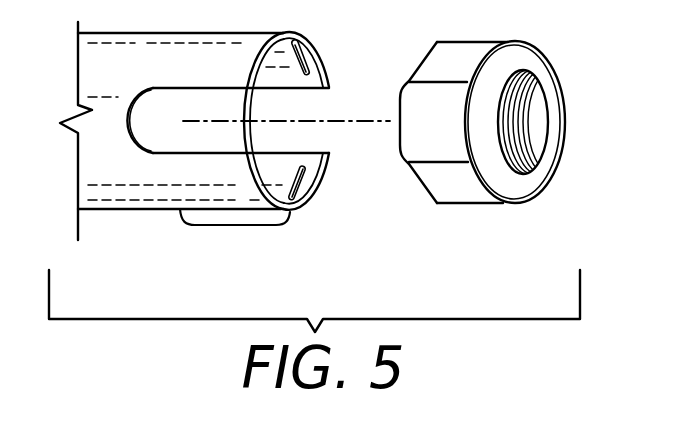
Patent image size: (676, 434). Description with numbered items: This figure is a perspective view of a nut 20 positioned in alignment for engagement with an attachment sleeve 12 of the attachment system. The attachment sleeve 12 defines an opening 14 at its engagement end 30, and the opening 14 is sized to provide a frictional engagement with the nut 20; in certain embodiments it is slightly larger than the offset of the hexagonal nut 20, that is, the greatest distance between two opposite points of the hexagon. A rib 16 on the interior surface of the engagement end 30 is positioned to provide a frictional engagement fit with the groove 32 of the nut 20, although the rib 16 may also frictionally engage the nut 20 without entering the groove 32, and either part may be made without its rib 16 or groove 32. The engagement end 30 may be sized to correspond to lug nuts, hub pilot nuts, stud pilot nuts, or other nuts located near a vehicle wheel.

The attachment sleeve 12 is at (296, 233).
The opening 14 is at (312, 82).
The rib 16 is at (316, 66).
The nut 20 is at (472, 196).
The engagement end 30 is at (235, 225).
The groove 32 is at (500, 193).